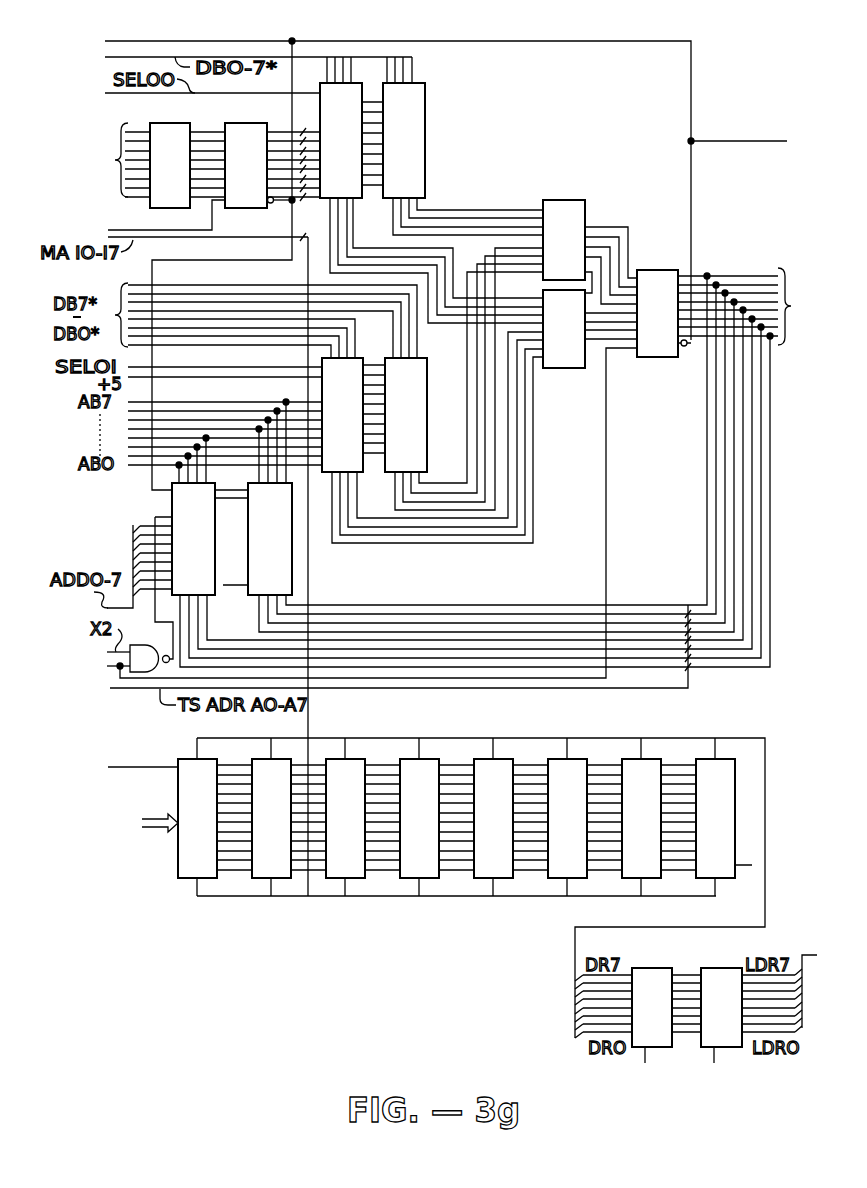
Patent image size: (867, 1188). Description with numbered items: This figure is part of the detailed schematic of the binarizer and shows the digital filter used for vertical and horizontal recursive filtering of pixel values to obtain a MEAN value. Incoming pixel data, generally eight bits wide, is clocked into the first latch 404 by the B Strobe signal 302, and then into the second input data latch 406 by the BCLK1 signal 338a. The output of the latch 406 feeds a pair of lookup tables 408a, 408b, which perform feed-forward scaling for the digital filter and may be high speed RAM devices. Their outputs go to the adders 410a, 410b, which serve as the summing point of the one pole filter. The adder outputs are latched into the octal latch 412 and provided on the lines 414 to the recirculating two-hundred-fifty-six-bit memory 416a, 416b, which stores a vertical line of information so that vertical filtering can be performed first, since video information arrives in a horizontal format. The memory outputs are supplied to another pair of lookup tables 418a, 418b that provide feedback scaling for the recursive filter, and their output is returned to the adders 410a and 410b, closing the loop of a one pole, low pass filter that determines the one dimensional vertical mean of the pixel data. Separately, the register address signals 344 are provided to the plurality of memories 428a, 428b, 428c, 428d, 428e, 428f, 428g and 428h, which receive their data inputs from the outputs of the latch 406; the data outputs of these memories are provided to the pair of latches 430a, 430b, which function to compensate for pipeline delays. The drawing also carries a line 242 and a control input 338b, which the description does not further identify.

The bus line 242 is at (134, 41).
The B Strobe signal 302 is at (133, 206).
The BCLK1 signal 338a is at (148, 230).
The control line 338b is at (113, 668).
The register address signals 344 is at (152, 832).
The first latch 404 is at (170, 165).
The second input data latch 406 is at (246, 165).
The lookup table 408a is at (341, 140).
The lookup table 408b is at (404, 140).
The adder 410a is at (564, 240).
The adder 410b is at (564, 329).
The octal latch 412 is at (664, 313).
The lines 414 is at (786, 280).
The recirculating 256-bit memory 416a is at (193, 539).
The recirculating 256-bit memory 416b is at (270, 539).
The lookup table 418a is at (342, 415).
The lookup table 418b is at (406, 415).
The memory 428a is at (197, 817).
The memory 428b is at (271, 817).
The memory 428c is at (345, 817).
The memory 428d is at (419, 817).
The memory 428e is at (493, 817).
The memory 428f is at (567, 817).
The memory 428g is at (641, 817).
The memory 428h is at (724, 817).
The latch 430a is at (652, 1015).
The latch 430b is at (721, 1015).